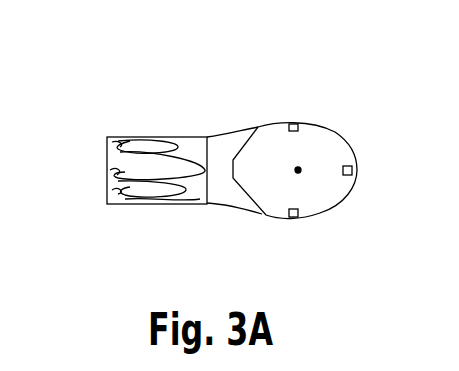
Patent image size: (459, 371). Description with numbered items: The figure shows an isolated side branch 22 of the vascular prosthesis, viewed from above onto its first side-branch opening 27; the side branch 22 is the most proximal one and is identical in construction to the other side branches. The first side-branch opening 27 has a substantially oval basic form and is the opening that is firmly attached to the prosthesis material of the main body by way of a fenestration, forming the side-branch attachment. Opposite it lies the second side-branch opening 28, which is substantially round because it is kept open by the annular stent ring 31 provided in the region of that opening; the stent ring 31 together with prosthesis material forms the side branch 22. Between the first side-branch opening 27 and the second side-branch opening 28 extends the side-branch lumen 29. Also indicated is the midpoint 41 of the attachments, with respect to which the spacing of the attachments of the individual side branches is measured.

The side branch 22 is at (197, 111).
The first side-branch opening 27 is at (315, 190).
The second side-branch opening 28 is at (107, 168).
The side-branch lumen 29 is at (291, 155).
The stent ring 31 is at (135, 143).
The midpoint 41 is at (296, 172).